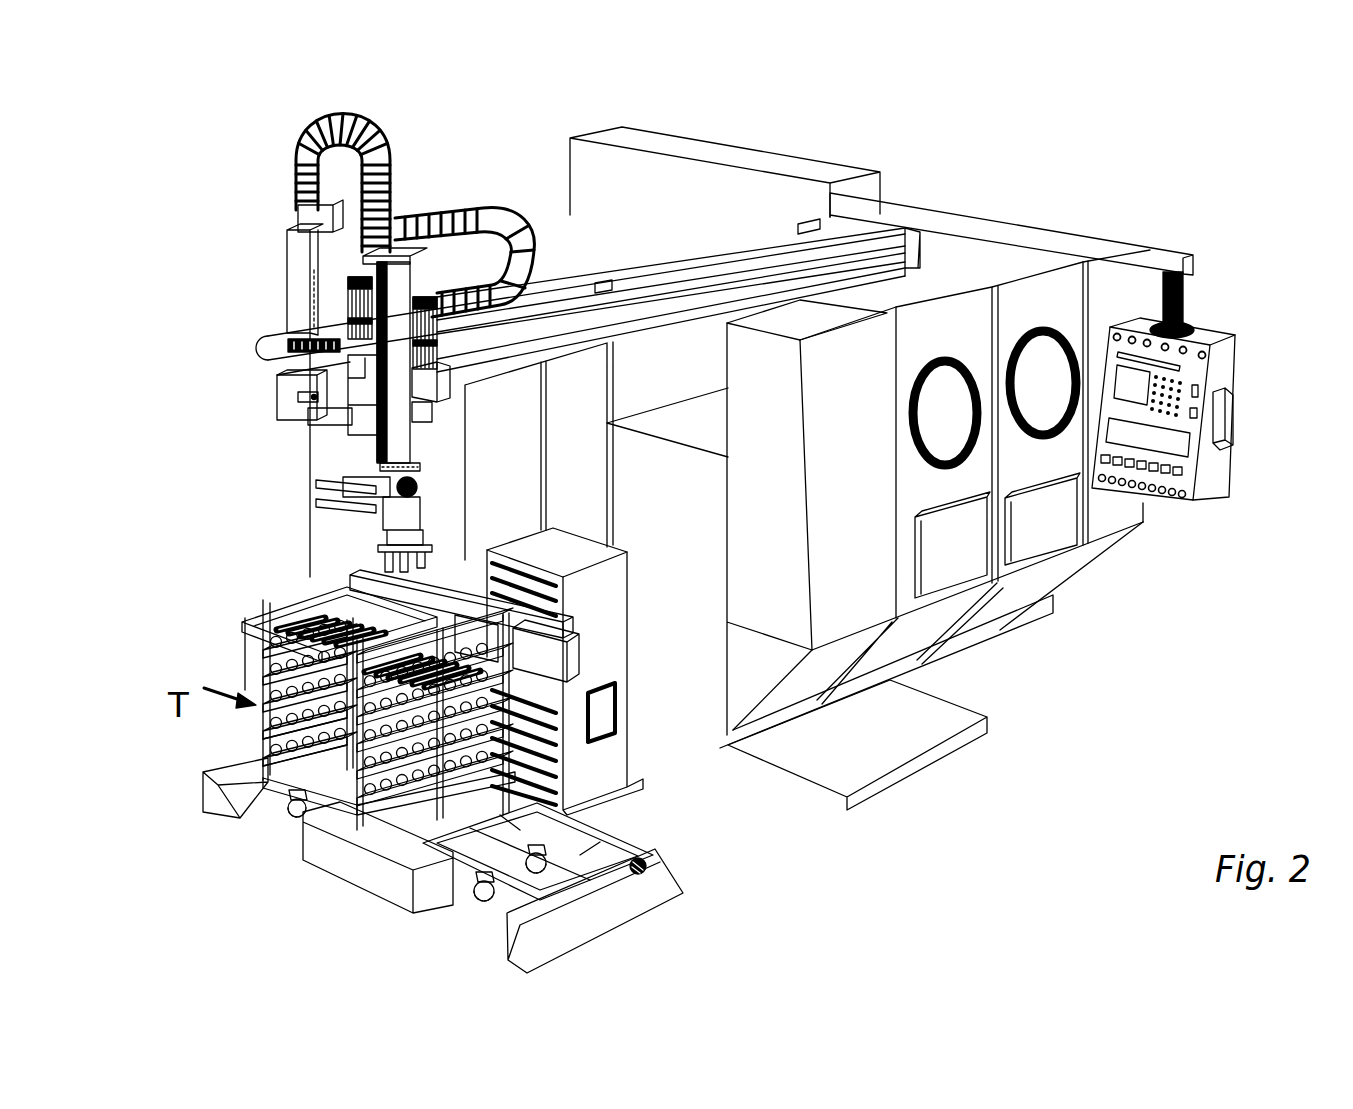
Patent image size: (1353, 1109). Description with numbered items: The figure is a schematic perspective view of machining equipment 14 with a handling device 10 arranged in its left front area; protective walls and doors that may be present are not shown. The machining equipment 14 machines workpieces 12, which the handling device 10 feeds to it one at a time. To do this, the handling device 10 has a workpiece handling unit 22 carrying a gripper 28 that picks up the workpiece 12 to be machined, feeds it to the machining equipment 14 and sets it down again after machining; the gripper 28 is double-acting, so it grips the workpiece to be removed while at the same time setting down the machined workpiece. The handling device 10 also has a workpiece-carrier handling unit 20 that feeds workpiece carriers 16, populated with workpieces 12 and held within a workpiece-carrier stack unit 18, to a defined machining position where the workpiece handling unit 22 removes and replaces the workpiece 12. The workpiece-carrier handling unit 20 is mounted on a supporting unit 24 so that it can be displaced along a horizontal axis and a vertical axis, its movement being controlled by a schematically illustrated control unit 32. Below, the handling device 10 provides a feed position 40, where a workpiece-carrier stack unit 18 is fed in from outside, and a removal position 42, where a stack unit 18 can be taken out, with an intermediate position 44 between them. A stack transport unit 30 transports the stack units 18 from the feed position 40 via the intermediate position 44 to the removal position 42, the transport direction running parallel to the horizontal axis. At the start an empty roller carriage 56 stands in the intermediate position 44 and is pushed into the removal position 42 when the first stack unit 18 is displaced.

The handling device 10 is at (263, 290).
The workpiece 12 is at (352, 605).
The machining equipment 14 is at (1126, 544).
The workpiece carrier 16 is at (270, 622).
The workpiece-carrier stack unit 18 is at (262, 720).
The workpiece-carrier handling unit 20 is at (305, 628).
The workpiece handling unit 22 is at (387, 462).
The supporting unit 24 is at (560, 658).
The gripper 28 is at (398, 550).
The stack transport unit 30 is at (586, 833).
The control unit 32 is at (605, 703).
The feed position 40 is at (286, 857).
The removal position 42 is at (496, 963).
The intermediate position 44 is at (380, 918).
The roller carriage 56 is at (297, 817).